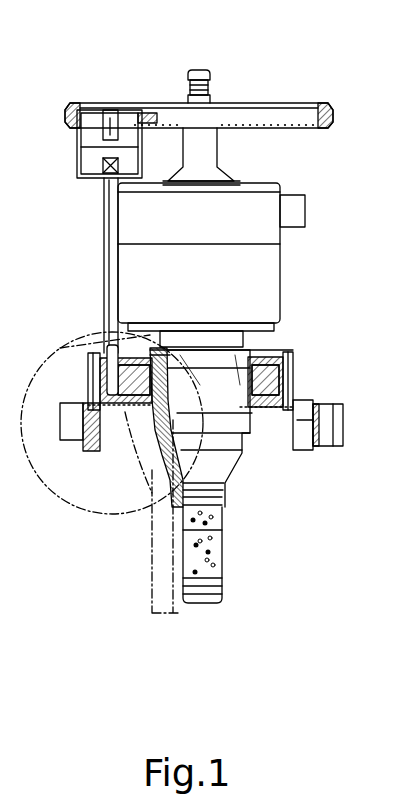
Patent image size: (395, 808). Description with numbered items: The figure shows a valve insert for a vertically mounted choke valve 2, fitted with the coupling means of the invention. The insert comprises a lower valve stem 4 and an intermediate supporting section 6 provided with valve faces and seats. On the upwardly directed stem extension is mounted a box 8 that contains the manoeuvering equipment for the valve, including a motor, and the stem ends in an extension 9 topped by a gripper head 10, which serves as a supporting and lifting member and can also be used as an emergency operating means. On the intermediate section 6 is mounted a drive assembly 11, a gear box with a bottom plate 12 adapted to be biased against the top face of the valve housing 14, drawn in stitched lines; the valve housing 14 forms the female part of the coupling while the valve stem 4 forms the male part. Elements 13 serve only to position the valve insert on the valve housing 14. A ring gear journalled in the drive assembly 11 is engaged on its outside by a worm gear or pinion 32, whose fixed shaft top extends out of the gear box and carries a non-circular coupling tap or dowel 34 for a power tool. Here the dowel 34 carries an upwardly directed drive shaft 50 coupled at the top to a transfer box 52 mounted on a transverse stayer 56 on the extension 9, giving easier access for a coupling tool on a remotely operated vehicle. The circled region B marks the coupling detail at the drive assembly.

The choke valve 2 is at (283, 338).
The lower valve stem 4 is at (223, 473).
The intermediate supporting section 6 is at (207, 385).
The box 8 is at (255, 287).
The extension 9 is at (203, 107).
The gripper head 10 is at (200, 70).
The drive assembly 11 is at (93, 375).
The bottom plate 12 is at (252, 408).
The positioning elements 13 is at (332, 410).
The valve housing 14 is at (160, 577).
The worm gear or pinion 32 is at (118, 410).
The coupling tap or dowel 34 is at (110, 343).
The drive shaft 50 is at (110, 232).
The transfer box 52 is at (72, 107).
The transverse stayer 56 is at (287, 110).
The detail region B is at (74, 510).